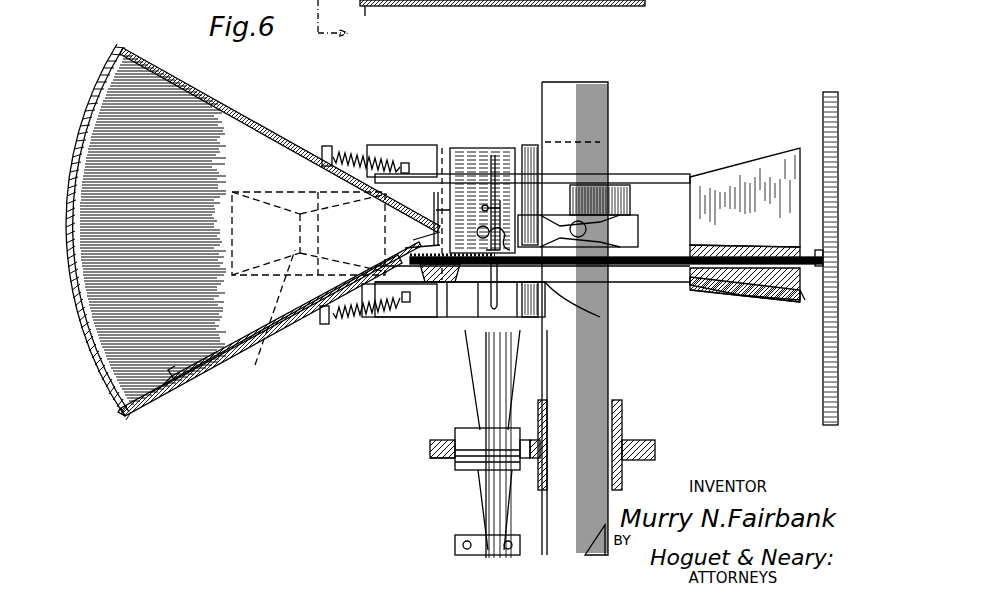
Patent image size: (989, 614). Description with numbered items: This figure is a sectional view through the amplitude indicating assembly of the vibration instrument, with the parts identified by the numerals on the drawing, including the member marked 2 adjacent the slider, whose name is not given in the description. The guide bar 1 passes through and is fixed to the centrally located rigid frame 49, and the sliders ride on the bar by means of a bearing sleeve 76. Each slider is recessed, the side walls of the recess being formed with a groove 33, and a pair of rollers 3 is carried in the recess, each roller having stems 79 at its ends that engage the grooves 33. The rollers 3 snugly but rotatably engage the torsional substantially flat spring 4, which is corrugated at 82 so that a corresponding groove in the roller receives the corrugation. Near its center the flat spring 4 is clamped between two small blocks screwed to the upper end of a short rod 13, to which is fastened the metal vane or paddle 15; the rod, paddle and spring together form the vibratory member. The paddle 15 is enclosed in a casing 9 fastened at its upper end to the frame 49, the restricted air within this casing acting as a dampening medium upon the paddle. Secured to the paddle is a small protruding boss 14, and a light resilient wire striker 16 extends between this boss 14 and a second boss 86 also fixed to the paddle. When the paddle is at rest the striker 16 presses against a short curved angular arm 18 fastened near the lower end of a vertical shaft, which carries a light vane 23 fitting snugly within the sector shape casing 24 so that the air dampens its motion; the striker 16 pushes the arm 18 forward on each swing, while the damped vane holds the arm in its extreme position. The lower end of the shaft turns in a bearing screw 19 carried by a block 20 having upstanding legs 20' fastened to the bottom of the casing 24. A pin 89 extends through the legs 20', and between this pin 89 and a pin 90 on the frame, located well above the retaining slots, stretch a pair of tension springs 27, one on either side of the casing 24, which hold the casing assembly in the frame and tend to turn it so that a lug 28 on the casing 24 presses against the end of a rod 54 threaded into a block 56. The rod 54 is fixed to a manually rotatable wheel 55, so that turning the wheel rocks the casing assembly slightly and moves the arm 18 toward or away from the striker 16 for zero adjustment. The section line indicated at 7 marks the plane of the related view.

The guide bar 1 is at (603, 98).
The support bracket 2 is at (625, 440).
The rollers 3 is at (505, 432).
The torsional flat spring 4 is at (505, 384).
The section line 7 is at (345, 27).
The casing 9 is at (540, 318).
The short rod 13 is at (524, 232).
The boss 14 is at (466, 200).
The paddle 15 is at (503, 170).
The striker 16 is at (462, 180).
The angular arm 18 is at (442, 148).
The bearing screw 19 is at (445, 6).
The block 20 is at (388, 21).
The upstanding legs 20' is at (285, 292).
The vane 23 is at (172, 396).
The sector shape casing 24 is at (262, 112).
The tension springs 27 is at (345, 320).
The lug 28 is at (440, 262).
The groove 33 is at (528, 460).
The rigid frame 49 is at (635, 290).
The rod 54 is at (470, 268).
The manually rotatable wheel 55 is at (823, 100).
The block 56 is at (458, 264).
The bearing sleeve 76 is at (625, 478).
The stems 79 is at (442, 460).
The corrugation 82 is at (497, 372).
The boss 86 is at (493, 200).
The pin 89 is at (322, 150).
The pin 90 is at (398, 318).